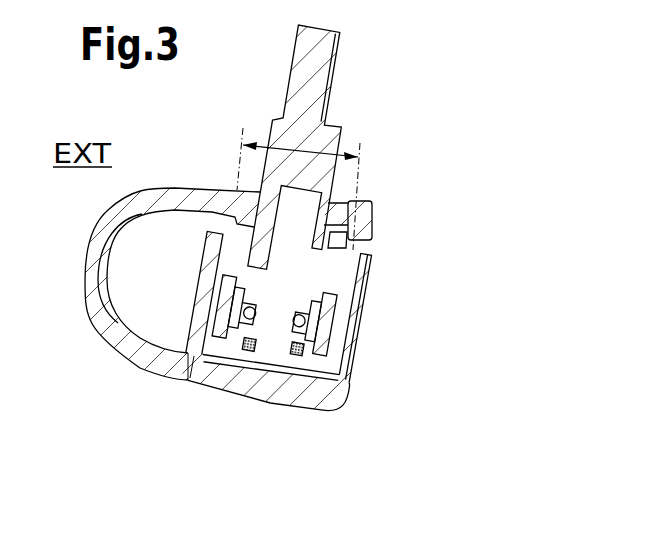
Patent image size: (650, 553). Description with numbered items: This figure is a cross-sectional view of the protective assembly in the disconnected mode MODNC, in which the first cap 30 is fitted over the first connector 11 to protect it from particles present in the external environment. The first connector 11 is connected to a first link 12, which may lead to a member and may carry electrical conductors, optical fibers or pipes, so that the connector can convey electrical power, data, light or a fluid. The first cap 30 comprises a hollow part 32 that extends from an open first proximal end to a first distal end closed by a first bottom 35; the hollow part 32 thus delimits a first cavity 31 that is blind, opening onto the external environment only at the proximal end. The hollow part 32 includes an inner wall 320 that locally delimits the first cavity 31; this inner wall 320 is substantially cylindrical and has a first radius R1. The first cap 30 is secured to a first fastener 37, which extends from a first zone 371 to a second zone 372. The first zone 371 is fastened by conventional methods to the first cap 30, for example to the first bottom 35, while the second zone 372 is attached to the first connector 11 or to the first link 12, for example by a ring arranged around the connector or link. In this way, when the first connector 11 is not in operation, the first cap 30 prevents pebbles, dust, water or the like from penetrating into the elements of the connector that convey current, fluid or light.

The first connector 11 is at (290, 290).
The first link 12 is at (330, 134).
The first cap 30 is at (325, 276).
The first cavity 31 is at (284, 278).
The hollow part 32 is at (347, 300).
The first bottom 35 is at (280, 396).
The first fastener 37 is at (90, 296).
The inner wall 320 is at (335, 356).
The first zone 371 is at (188, 380).
The second zone 372 is at (357, 220).
The first radius R1 is at (258, 155).
The disconnected mode MODNC is at (386, 61).